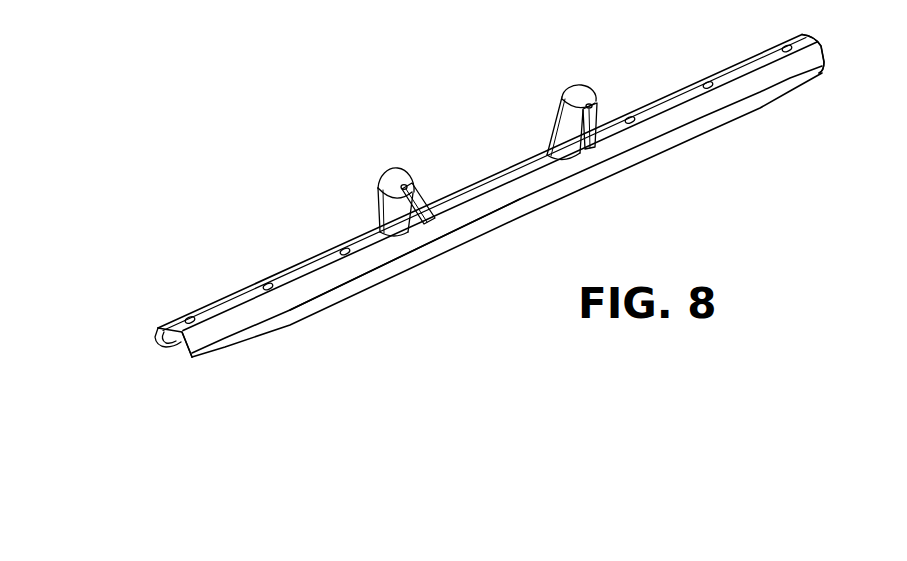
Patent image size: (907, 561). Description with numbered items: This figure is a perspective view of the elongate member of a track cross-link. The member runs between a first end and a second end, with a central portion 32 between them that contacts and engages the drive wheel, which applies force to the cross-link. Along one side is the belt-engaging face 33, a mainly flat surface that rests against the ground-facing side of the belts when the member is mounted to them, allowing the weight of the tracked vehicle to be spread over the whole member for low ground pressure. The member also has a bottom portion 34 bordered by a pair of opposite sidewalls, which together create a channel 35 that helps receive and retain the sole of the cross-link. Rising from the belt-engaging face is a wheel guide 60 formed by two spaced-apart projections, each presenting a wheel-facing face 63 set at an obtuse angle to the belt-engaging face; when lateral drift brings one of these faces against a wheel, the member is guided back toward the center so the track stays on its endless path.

The central portion 32 is at (457, 217).
The belt-engaging face 33 is at (664, 110).
The bottom portion 34 is at (229, 305).
The channel 35 is at (167, 345).
The wheel guide 60 is at (452, 145).
The wheel-facing face 63 is at (545, 143).